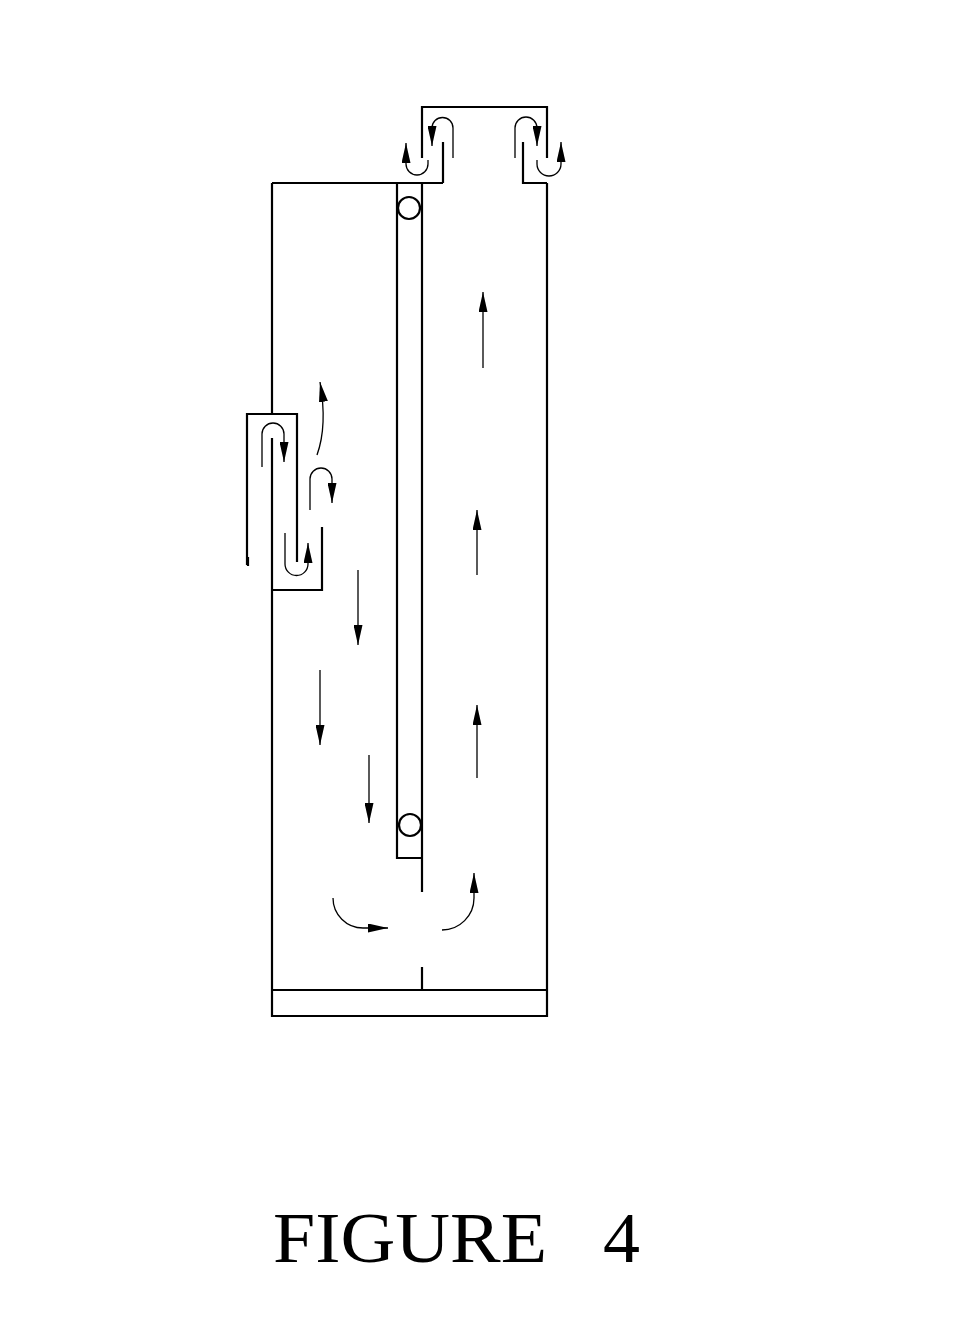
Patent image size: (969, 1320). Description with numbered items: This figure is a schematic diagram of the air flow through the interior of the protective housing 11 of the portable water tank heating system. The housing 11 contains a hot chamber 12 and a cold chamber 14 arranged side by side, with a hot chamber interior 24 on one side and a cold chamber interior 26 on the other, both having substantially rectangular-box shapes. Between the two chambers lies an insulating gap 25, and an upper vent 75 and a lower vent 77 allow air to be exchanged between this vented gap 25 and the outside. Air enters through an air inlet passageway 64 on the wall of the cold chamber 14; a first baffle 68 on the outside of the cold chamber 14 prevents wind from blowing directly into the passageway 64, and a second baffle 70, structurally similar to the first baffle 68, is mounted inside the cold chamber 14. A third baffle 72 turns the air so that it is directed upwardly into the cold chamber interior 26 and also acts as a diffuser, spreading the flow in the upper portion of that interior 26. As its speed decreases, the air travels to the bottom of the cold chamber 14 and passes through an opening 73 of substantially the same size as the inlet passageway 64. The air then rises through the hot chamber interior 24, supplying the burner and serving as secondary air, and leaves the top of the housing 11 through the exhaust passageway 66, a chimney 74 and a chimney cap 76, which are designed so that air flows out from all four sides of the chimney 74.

The protective housing 11 is at (548, 352).
The hot chamber 12 is at (508, 643).
The cold chamber 14 is at (295, 822).
The hot chamber interior 24 is at (515, 503).
The insulating gap 25 is at (412, 357).
The cold chamber interior 26 is at (293, 753).
The air inlet passageway 64 is at (258, 560).
The exhaust passageway 66 is at (497, 182).
The first baffle 68 is at (247, 463).
The second baffle 70 is at (279, 414).
The third baffle 72 is at (307, 590).
The opening 73 is at (420, 943).
The chimney 74 is at (443, 170).
The upper vent 75 is at (403, 203).
The chimney cap 76 is at (498, 107).
The lower vent 77 is at (420, 827).